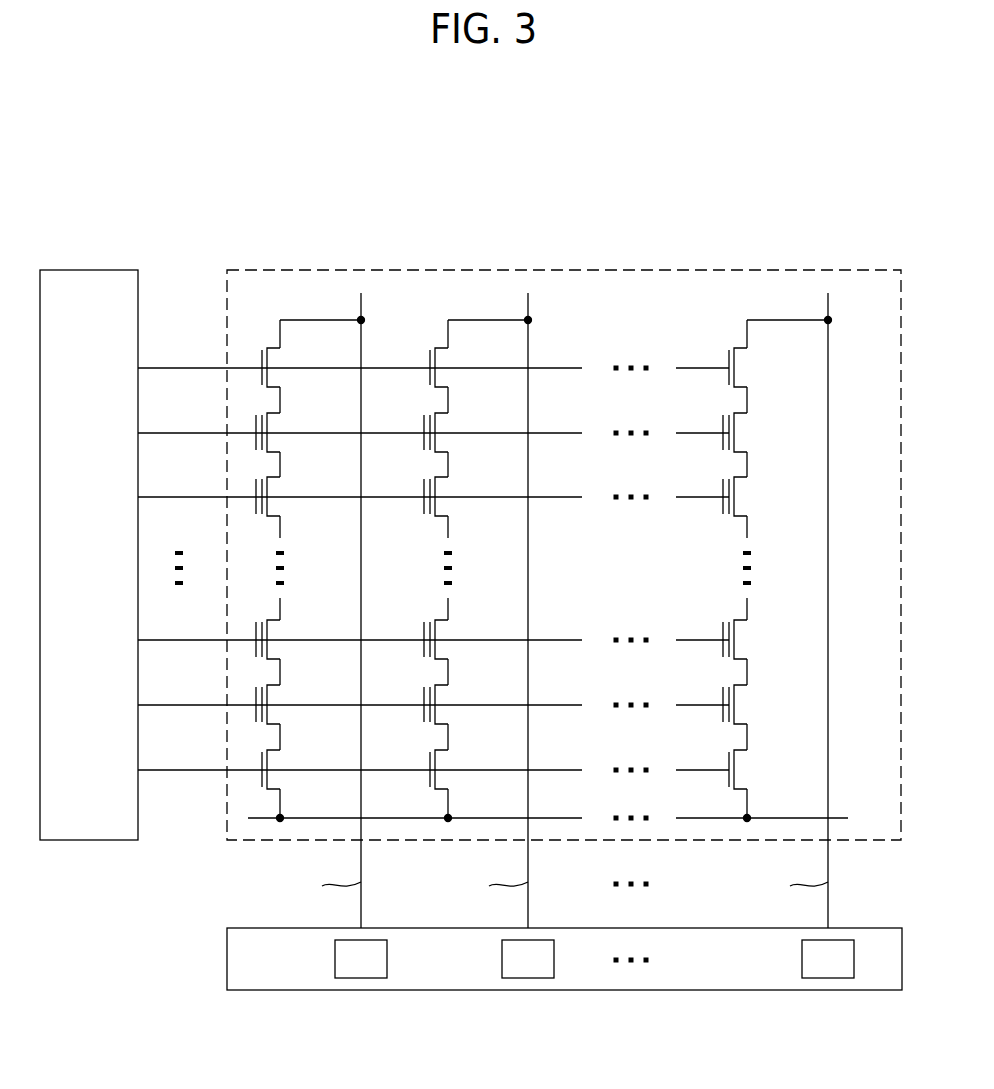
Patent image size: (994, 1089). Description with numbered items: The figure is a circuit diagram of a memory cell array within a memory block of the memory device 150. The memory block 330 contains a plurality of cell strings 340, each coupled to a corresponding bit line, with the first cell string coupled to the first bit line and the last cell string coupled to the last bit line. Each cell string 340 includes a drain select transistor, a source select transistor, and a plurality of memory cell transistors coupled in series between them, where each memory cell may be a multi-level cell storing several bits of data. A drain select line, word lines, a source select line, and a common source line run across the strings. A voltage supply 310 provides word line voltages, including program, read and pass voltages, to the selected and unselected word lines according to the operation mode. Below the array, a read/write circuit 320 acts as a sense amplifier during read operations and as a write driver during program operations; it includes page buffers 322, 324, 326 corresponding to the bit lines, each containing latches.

The memory device 150 is at (875, 172).
The voltage supply 310 is at (88, 270).
The read/write circuit 320 is at (227, 958).
The page buffer 322 is at (335, 958).
The page buffer 324 is at (503, 958).
The page buffer 326 is at (802, 958).
The memory block 330 is at (787, 270).
The cell string 340 is at (265, 327).